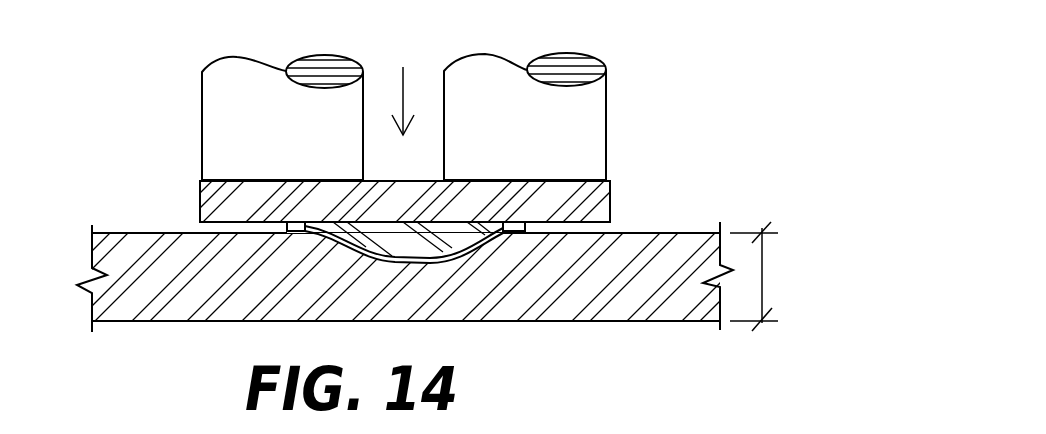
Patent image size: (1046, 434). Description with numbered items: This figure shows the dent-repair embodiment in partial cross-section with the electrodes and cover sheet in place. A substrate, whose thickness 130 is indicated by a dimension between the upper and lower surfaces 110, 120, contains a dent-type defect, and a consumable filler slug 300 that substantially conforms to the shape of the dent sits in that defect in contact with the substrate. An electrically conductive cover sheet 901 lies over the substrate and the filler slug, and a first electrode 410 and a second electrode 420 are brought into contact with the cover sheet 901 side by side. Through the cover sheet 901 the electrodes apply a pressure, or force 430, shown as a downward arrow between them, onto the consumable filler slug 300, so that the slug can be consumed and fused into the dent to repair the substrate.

The substrate 110 is at (683, 233).
The bottom surface of substrate 120 is at (647, 321).
The thickness 130 is at (762, 268).
The consumable filler slug 300 is at (407, 257).
The first electrode 410 is at (202, 110).
The second electrode 420 is at (606, 106).
The force 430 is at (403, 72).
The electrically conductive cover sheet 901 is at (610, 194).